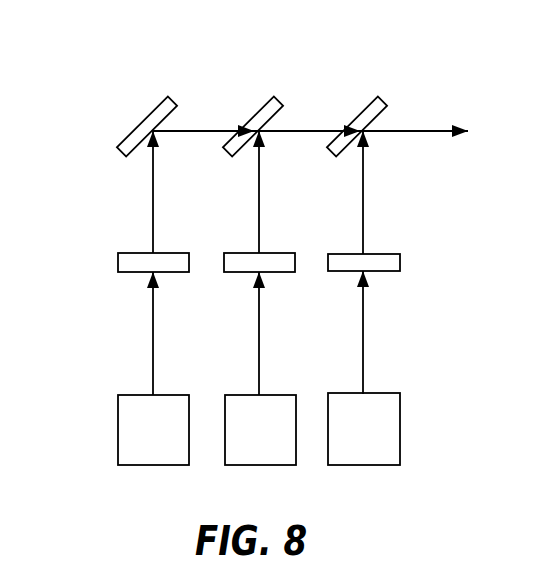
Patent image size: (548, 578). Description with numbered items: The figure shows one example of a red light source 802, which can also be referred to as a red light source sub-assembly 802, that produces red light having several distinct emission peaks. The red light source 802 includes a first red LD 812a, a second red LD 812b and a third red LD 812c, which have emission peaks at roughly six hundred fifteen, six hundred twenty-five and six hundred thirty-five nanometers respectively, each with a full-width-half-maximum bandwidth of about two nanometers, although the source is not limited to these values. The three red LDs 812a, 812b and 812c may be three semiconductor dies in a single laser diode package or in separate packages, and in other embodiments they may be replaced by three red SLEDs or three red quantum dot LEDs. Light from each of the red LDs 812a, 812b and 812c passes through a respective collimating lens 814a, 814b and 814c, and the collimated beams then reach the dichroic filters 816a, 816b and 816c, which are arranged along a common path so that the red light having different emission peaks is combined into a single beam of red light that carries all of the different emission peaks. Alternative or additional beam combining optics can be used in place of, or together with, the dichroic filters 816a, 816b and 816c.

The red light source 802 is at (128, 63).
The first red LD 812a is at (153, 430).
The second red LD 812b is at (260, 430).
The third red LD 812c is at (364, 429).
The collimating lens 814a is at (175, 252).
The collimating lens 814b is at (281, 252).
The collimating lens 814c is at (387, 252).
The dichroic filter 816a is at (165, 90).
The dichroic filter 816b is at (275, 90).
The dichroic filter 816c is at (377, 90).